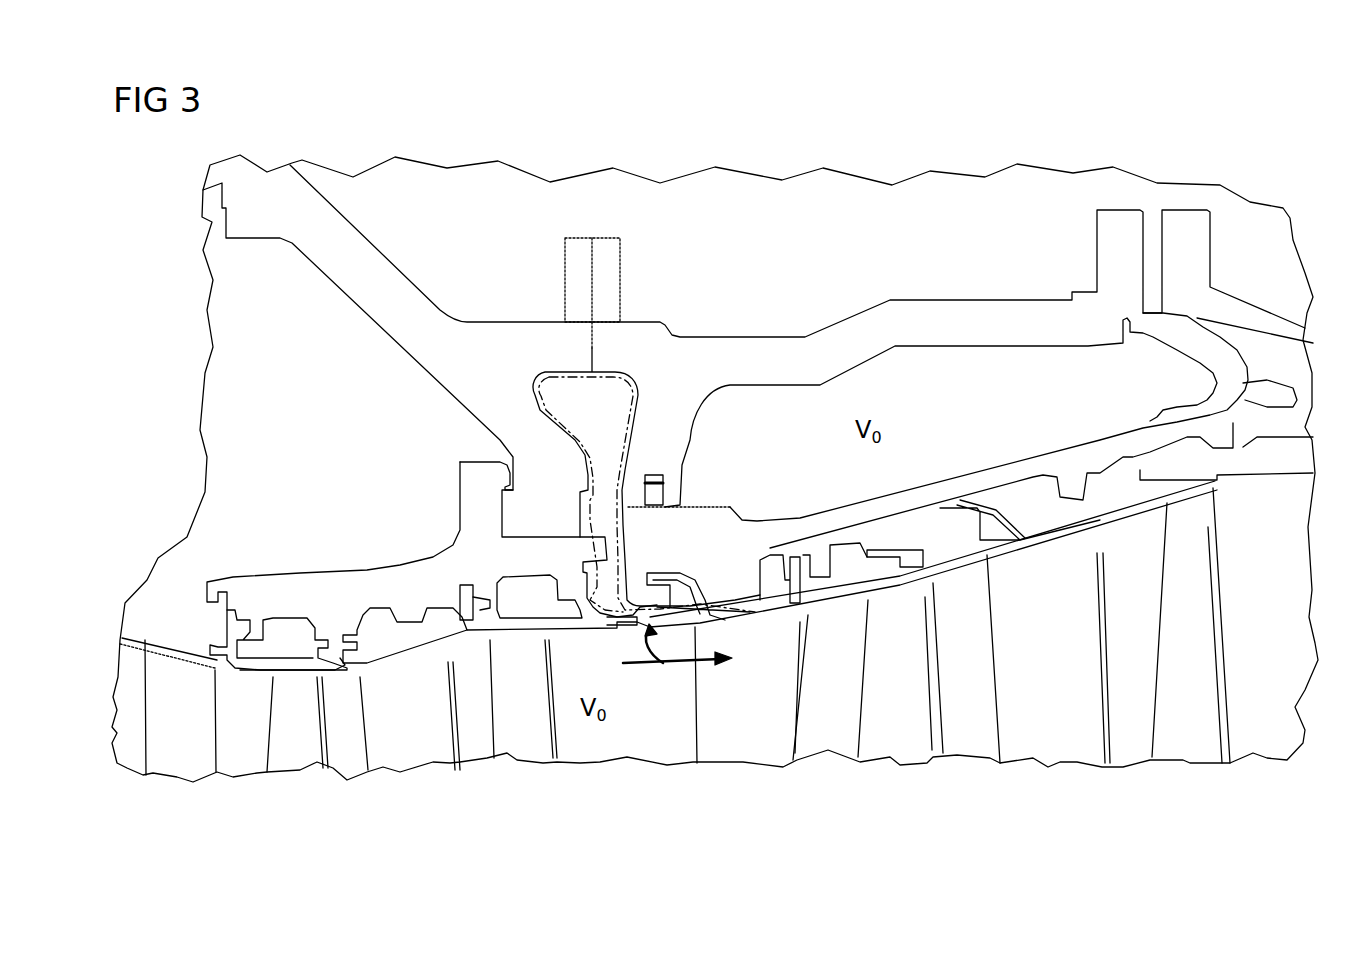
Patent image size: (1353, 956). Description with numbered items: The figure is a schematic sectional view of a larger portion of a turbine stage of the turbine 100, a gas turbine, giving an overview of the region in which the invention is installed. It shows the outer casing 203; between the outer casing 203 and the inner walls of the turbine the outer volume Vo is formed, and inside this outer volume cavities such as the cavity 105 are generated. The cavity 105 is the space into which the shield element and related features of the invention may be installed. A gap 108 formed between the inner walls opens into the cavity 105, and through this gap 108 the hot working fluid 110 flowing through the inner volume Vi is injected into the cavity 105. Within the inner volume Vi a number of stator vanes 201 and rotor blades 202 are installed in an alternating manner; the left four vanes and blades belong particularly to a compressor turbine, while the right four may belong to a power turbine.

The turbine 100 is at (1218, 142).
The cavity 105 is at (545, 392).
The gap 108 is at (620, 630).
The working fluid 110 is at (665, 665).
The stator vanes 201 is at (188, 774).
The rotor blades 202 is at (296, 755).
The outer casing 203 is at (670, 500).